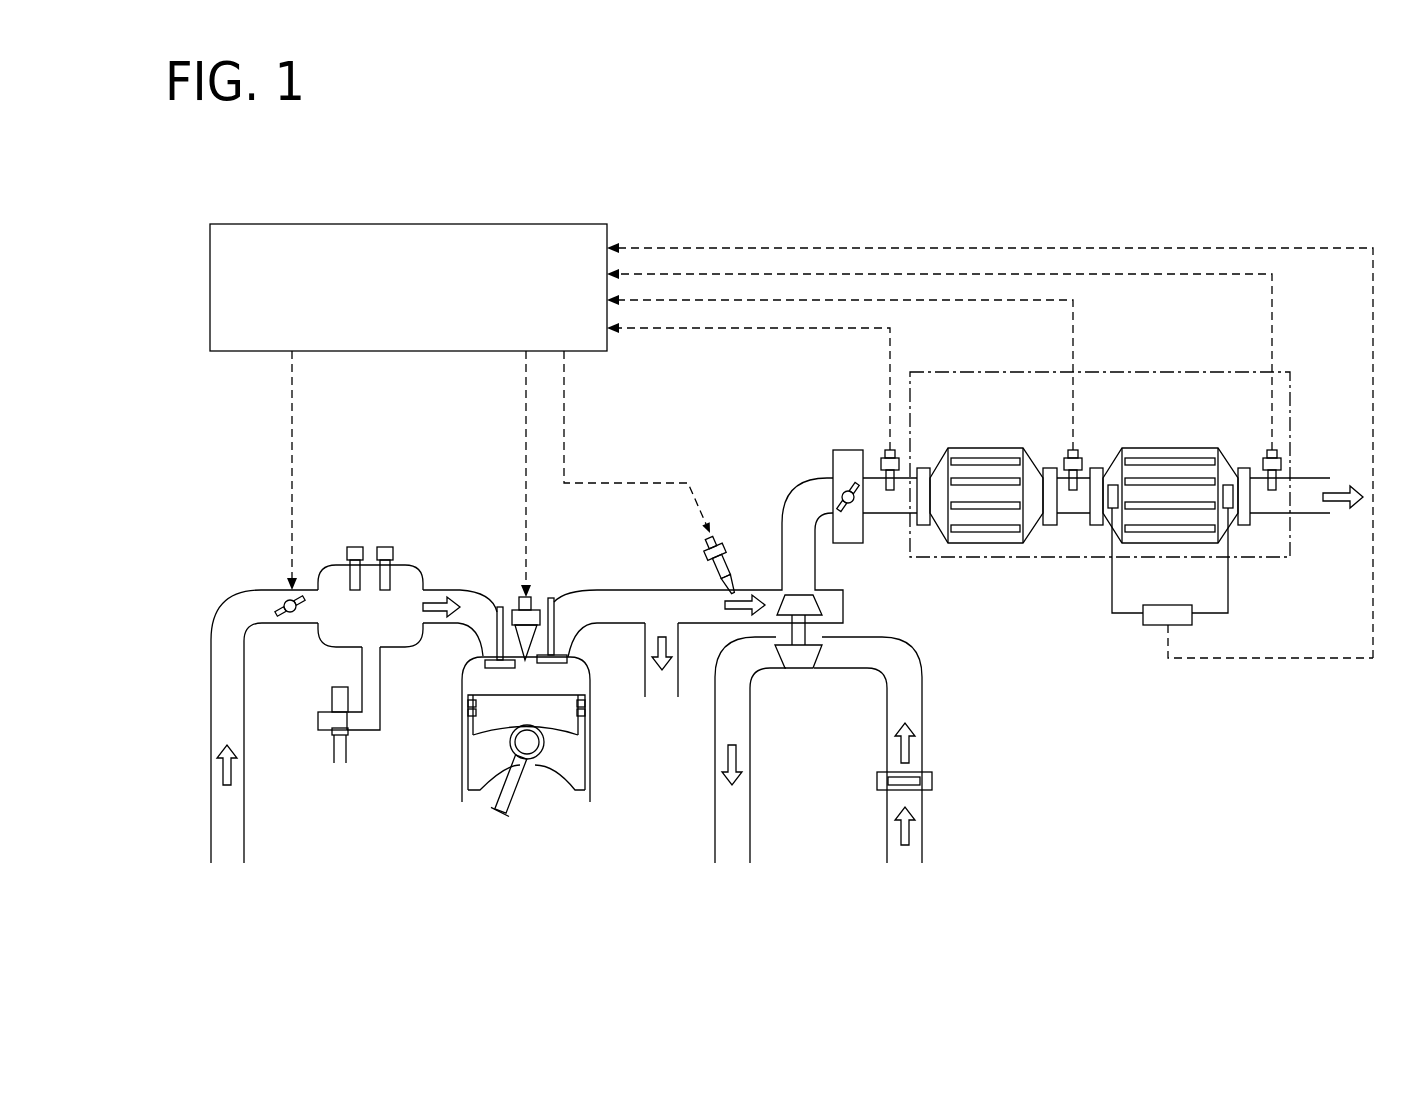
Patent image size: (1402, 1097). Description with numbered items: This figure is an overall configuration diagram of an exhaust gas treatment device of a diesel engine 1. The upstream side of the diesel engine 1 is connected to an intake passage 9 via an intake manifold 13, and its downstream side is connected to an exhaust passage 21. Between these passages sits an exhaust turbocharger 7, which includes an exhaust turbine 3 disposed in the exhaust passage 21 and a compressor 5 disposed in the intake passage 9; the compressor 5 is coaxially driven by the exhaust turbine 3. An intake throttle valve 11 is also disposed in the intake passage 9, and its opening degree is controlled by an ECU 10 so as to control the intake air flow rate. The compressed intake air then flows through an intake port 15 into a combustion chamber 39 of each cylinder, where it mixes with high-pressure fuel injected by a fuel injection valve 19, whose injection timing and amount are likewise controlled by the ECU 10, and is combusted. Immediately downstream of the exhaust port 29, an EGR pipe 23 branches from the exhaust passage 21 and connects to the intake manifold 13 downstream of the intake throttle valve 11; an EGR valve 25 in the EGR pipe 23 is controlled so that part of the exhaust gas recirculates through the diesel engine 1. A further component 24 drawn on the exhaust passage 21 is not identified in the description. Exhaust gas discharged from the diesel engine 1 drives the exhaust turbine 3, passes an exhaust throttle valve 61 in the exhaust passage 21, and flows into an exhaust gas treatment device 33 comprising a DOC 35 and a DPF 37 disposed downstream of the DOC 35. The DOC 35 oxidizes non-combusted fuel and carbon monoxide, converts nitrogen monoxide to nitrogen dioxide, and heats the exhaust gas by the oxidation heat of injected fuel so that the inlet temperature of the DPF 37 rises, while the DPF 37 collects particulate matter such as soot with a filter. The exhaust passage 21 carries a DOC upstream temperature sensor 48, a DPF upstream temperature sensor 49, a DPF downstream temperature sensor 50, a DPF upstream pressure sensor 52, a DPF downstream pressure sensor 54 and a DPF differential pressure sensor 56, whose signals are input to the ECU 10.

The diesel engine 1 is at (424, 797).
The exhaust turbine 3 is at (800, 595).
The compressor 5 is at (800, 656).
The exhaust turbocharger 7 is at (839, 630).
The intake passage 9 is at (211, 720).
The ECU 10 is at (407, 224).
The intake throttle valve 11 is at (288, 600).
The intake manifold 13 is at (420, 576).
The intake port 15 is at (465, 627).
The fuel injection valve 19 is at (539, 598).
The exhaust passage 21 is at (655, 588).
The EGR pipe 23 is at (333, 751).
The exhaust additive injector 24 is at (722, 540).
The EGR valve 25 is at (332, 693).
The exhaust port 29 is at (585, 625).
The exhaust gas treatment device 33 is at (1183, 371).
The DOC 35 is at (985, 530).
The DPF 37 is at (1142, 532).
The combustion chamber 39 is at (527, 683).
The DOC upstream temperature sensor 48 is at (883, 455).
The DPF upstream temperature sensor 49 is at (1066, 455).
The DPF downstream temperature sensor 50 is at (1281, 458).
The DPF upstream pressure sensor 52 is at (1112, 482).
The DPF downstream pressure sensor 54 is at (1228, 482).
The DPF differential pressure sensor 56 is at (1158, 627).
The exhaust throttle valve 61 is at (833, 465).